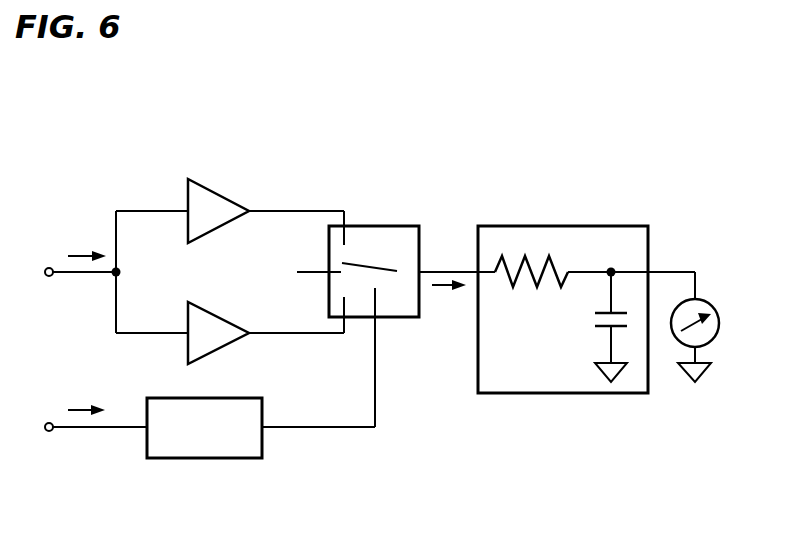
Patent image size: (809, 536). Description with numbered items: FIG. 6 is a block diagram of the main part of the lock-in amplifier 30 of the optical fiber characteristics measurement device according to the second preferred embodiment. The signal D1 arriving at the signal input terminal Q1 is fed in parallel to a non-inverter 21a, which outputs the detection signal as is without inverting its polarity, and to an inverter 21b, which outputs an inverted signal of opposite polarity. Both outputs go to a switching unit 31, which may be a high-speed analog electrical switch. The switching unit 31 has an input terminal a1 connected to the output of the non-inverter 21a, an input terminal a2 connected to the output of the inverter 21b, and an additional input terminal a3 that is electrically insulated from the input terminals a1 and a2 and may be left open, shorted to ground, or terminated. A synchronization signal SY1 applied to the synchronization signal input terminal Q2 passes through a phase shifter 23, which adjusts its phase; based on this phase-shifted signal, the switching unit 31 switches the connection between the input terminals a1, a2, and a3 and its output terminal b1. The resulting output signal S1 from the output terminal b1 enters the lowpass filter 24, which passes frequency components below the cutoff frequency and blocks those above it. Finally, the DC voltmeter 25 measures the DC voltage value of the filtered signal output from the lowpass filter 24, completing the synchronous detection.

The lock-in amplifier 30 is at (479, 151).
The non-inverter 21a is at (223, 193).
The inverter 21b is at (223, 313).
The switching unit 31 is at (377, 274).
The input terminal a1 is at (344, 225).
The input terminal a2 is at (345, 318).
The input terminal a3 is at (330, 270).
The output terminal b1 is at (420, 268).
The lowpass filter 24 is at (577, 225).
The DC voltmeter 25 is at (720, 322).
The phase shifter 23 is at (220, 458).
The input data signal D1 is at (80, 254).
The signal input terminal Q1 is at (49, 277).
The synchronization signal input terminal Q2 is at (49, 434).
The synchronization signal SY1 is at (80, 408).
The output signal S1 is at (442, 288).